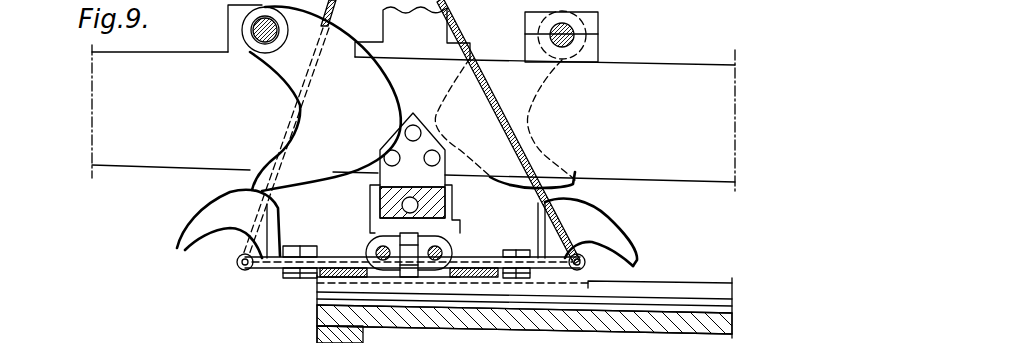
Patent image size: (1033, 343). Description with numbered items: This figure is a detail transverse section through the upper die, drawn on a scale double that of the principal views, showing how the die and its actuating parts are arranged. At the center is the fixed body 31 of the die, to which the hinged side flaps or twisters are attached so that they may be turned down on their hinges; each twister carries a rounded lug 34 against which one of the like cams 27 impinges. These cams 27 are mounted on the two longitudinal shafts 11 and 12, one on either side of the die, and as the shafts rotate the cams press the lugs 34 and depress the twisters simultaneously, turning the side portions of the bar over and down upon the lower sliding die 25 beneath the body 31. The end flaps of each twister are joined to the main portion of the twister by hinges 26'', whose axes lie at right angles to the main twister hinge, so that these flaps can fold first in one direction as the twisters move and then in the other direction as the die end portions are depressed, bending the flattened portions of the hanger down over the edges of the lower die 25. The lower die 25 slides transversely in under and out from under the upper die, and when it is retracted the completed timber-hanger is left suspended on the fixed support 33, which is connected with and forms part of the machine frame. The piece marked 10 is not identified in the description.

The stepped member 10 is at (412, 30).
The longitudinal shaft 11 is at (578, 27).
The longitudinal shaft 12 is at (252, 23).
The cam 27 is at (612, 193).
The rounded lug 34 is at (193, 221).
The central body portion 31 is at (393, 198).
The hinge 26'' is at (290, 272).
The lower sliding die 25 is at (524, 309).
The fixed support 33 is at (359, 334).